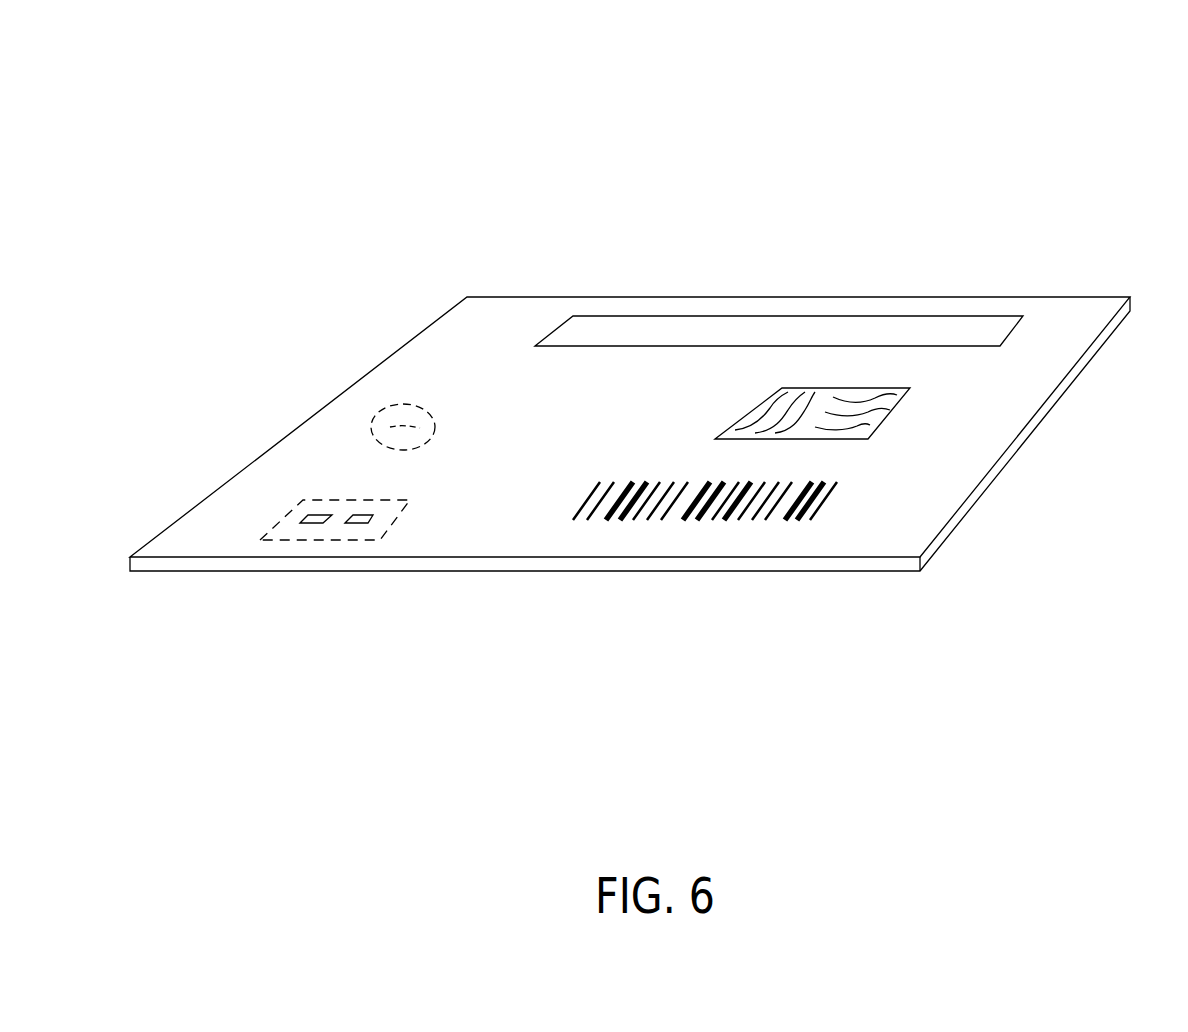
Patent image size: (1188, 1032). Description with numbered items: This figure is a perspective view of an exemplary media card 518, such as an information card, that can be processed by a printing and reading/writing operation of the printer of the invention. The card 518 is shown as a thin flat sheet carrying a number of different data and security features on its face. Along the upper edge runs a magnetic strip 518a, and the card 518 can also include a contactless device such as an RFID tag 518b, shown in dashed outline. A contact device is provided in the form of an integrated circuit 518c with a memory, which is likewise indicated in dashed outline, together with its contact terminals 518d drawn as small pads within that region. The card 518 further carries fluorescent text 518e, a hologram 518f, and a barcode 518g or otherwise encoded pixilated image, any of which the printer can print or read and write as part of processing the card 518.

The card 518 is at (830, 212).
The magnetic strip 518a is at (892, 316).
The RFID tag 518b is at (393, 398).
The integrated circuit 518c is at (270, 545).
The contact terminals 518d is at (350, 523).
The fluorescent text 518e is at (620, 398).
The hologram 518f is at (897, 415).
The barcode 518g is at (662, 523).